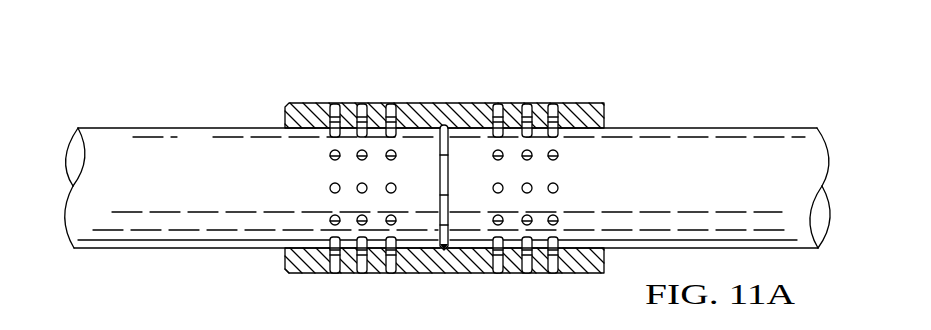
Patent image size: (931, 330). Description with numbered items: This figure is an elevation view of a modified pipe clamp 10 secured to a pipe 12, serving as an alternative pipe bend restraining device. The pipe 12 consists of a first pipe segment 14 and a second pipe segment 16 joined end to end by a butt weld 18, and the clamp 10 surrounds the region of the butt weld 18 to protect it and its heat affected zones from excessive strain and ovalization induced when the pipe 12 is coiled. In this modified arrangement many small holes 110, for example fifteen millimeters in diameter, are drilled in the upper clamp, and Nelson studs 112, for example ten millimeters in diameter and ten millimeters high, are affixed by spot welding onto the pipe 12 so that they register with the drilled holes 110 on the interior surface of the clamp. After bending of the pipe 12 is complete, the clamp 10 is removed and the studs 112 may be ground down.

The pipe clamp 10 is at (291, 83).
The pipe 12 is at (118, 96).
The first pipe segment 14 is at (198, 128).
The second pipe segment 16 is at (688, 128).
The butt weld 18 is at (428, 187).
The small holes 110 is at (330, 104).
The Nelson studs 112 is at (397, 104).